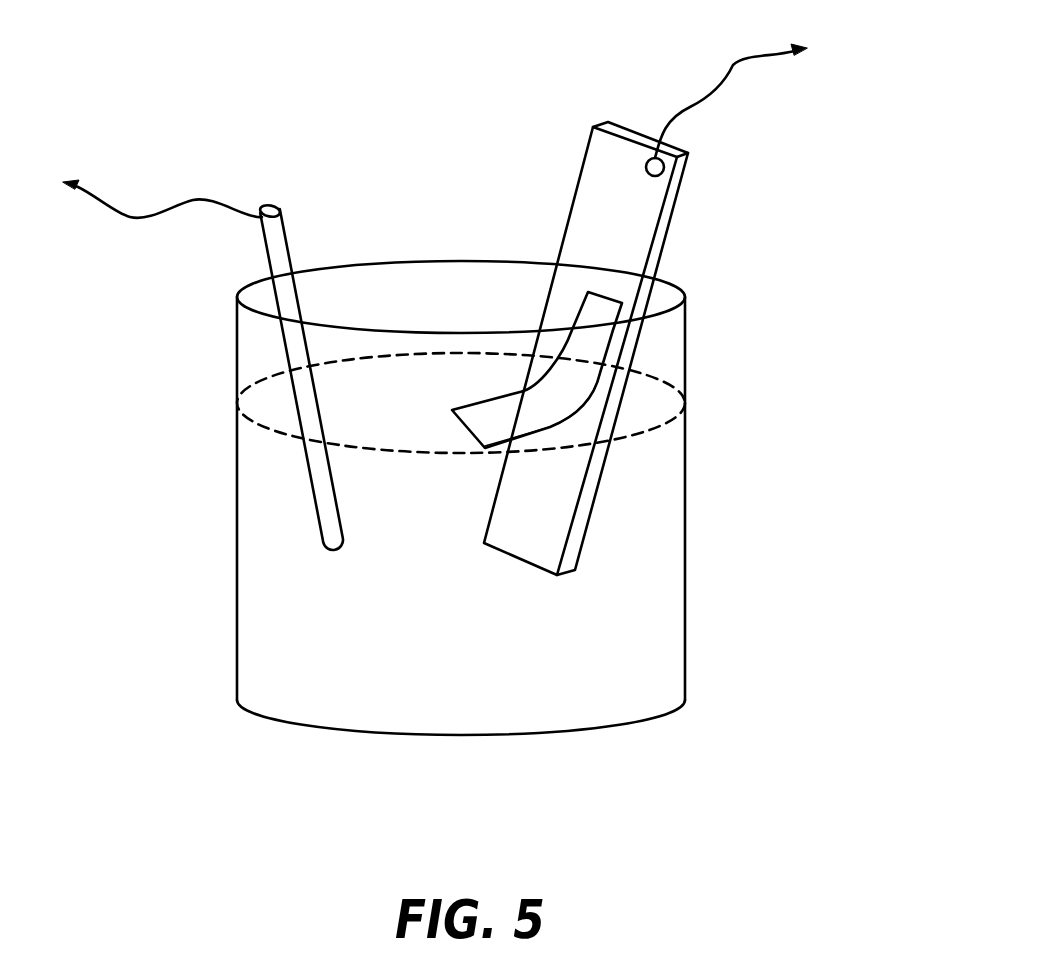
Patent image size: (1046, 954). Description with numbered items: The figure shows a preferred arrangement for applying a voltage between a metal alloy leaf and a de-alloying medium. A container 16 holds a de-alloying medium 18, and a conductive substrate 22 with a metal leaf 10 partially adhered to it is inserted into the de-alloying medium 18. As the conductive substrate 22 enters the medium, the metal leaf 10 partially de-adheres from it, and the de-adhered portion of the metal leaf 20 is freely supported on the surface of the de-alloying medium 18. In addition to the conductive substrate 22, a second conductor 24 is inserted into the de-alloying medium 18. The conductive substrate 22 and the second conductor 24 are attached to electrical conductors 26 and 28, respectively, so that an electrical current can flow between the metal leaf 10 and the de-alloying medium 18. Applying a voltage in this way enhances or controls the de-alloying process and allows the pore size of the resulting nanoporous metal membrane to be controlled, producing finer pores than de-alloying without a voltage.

The metal leaf 10 is at (607, 310).
The container 16 is at (237, 348).
The de-alloying medium 18 is at (267, 430).
The de-adhered portion of the metal leaf 20 is at (523, 420).
The conductive substrate 22 is at (580, 168).
The second conductor 24 is at (267, 207).
The electrical conductor 26 is at (733, 65).
The electrical conductor 28 is at (145, 210).